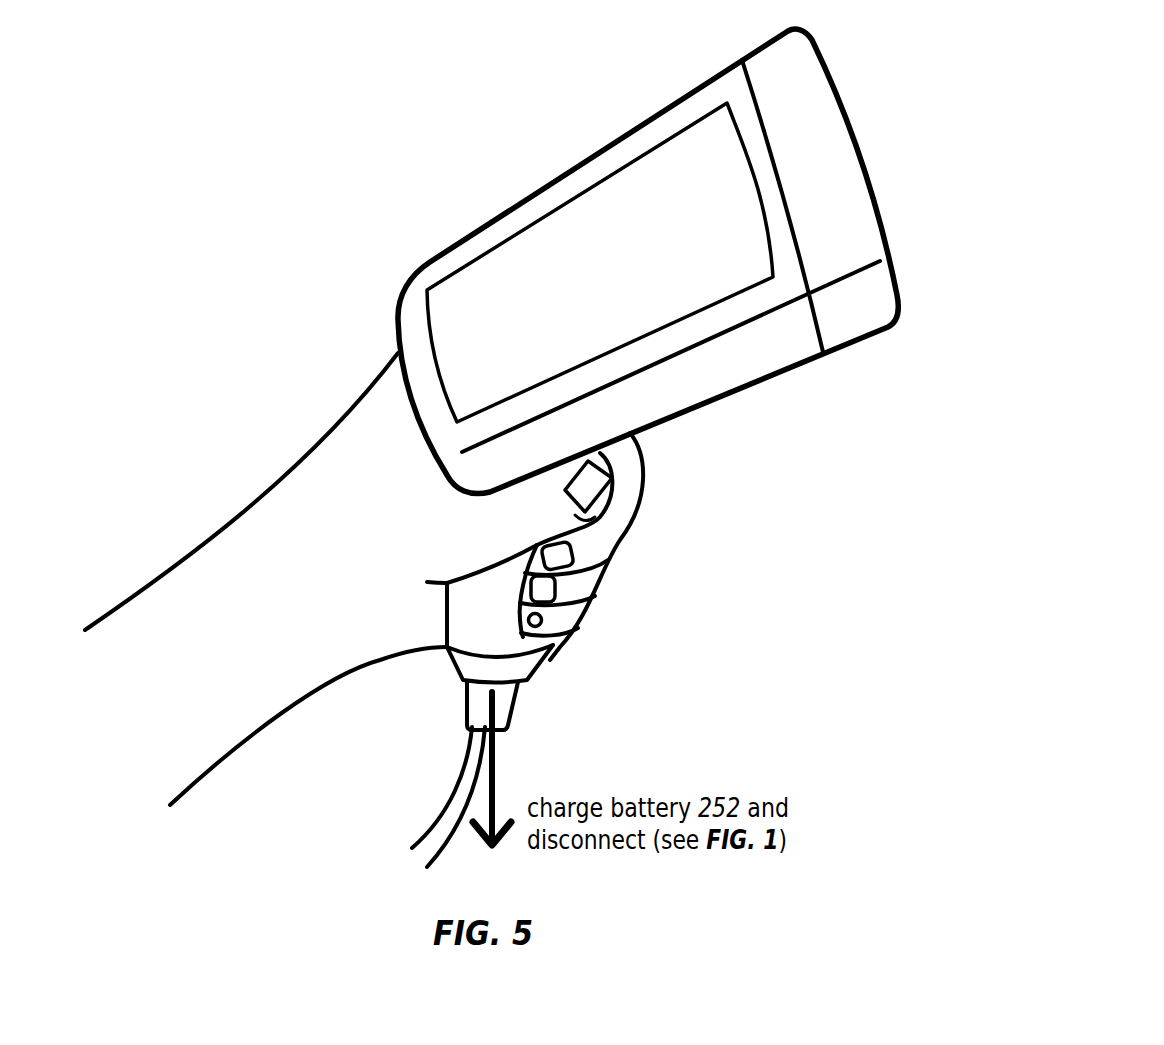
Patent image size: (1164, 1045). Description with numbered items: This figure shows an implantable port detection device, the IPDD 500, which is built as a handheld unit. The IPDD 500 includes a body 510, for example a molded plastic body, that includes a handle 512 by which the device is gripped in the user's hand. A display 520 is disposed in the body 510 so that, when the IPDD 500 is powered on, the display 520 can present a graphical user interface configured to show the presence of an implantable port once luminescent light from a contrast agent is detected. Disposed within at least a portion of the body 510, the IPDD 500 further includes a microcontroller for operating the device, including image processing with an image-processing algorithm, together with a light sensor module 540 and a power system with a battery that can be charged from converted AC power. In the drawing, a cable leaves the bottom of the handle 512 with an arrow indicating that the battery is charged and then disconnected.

The IPDD 500 is at (776, 379).
The body 510 is at (673, 393).
The handle 512 is at (503, 638).
The display 520 is at (707, 147).
The light sensor module 540 is at (843, 153).